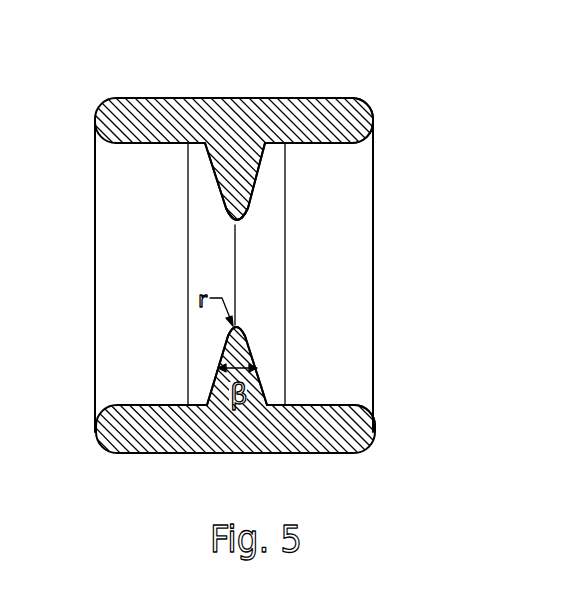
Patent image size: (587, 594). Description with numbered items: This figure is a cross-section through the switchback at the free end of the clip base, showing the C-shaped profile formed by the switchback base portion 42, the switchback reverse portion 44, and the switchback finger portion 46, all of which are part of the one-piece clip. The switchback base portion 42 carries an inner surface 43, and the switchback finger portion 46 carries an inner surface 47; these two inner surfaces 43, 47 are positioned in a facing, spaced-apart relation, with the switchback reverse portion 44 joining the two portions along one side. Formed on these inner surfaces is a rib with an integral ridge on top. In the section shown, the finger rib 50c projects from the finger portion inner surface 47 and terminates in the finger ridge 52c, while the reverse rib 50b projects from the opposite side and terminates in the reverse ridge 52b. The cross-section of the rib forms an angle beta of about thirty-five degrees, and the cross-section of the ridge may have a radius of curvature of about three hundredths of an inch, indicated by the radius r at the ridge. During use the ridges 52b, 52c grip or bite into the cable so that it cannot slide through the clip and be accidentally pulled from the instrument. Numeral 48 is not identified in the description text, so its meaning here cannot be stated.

The switchback base portion 42 is at (376, 436).
The switchback base portion inner surface 43 is at (350, 405).
The switchback reverse portion 44 is at (373, 232).
The switchback finger portion 46 is at (372, 100).
The switchback finger portion inner surface 47 is at (345, 145).
The top flange 48 is at (283, 98).
The reverse rib 50b is at (262, 395).
The finger rib 50c is at (218, 184).
The reverse ridge 52b is at (243, 330).
The finger ridge 52c is at (232, 223).